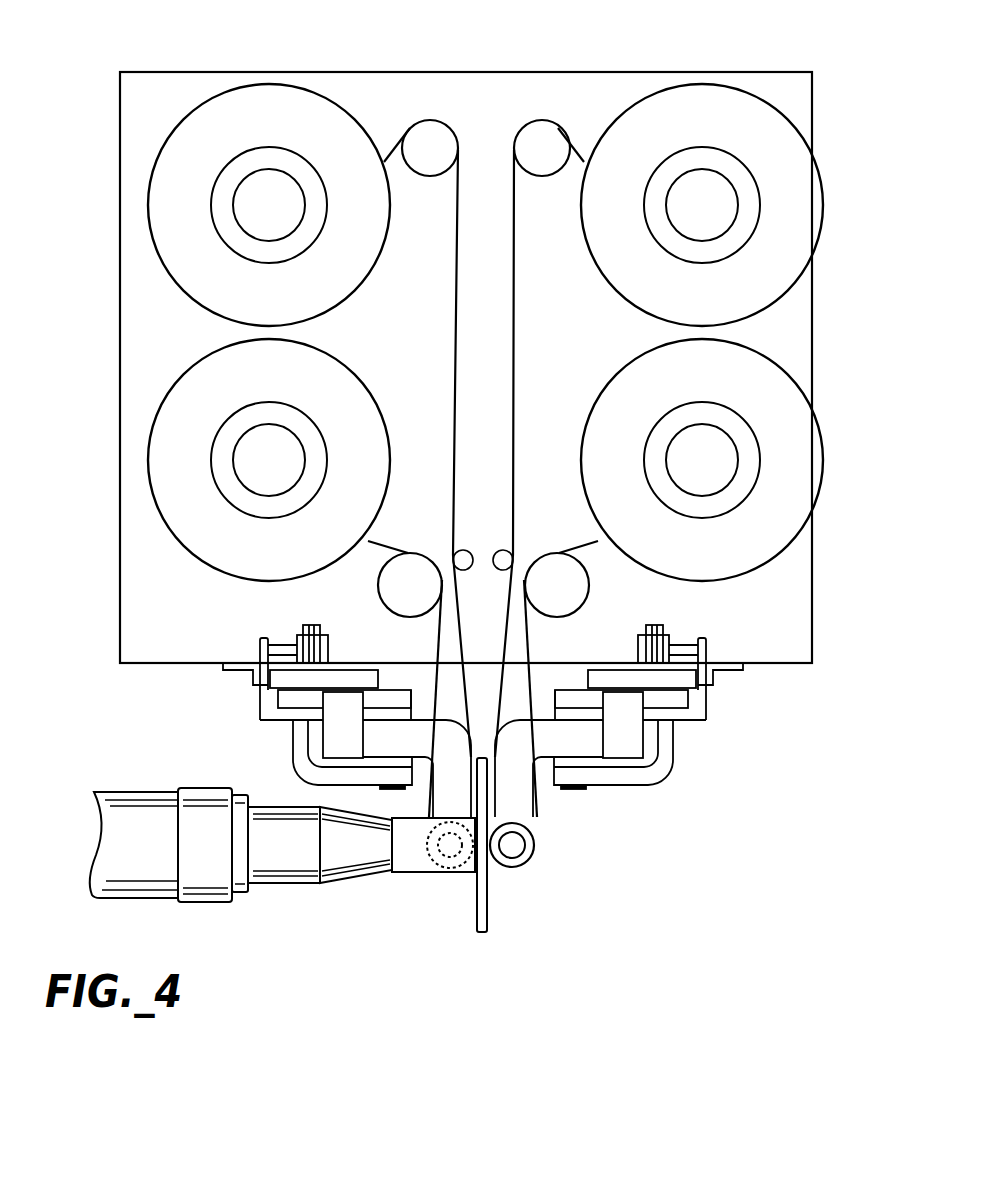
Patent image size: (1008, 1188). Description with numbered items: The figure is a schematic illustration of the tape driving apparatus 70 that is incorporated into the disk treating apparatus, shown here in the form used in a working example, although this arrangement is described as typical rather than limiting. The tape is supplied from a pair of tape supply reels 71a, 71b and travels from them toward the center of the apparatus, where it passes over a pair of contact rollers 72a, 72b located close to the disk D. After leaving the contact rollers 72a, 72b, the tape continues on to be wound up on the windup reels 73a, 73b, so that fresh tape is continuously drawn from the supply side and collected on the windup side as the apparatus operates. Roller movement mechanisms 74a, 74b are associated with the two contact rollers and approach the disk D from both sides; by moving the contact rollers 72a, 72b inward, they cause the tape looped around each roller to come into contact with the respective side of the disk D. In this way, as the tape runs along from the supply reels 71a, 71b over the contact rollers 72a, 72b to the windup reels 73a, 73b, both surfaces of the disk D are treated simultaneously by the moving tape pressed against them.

The tape driving apparatus 70 is at (386, 85).
The windup reel 73a is at (172, 212).
The windup reel 73b is at (793, 141).
The tape supply reel 71a is at (172, 517).
The tape supply reel 71b is at (777, 523).
The roller movement mechanism 74a is at (303, 747).
The roller movement mechanism 74b is at (637, 778).
The contact roller 72a is at (420, 865).
The contact roller 72b is at (522, 858).
The disk D is at (485, 915).